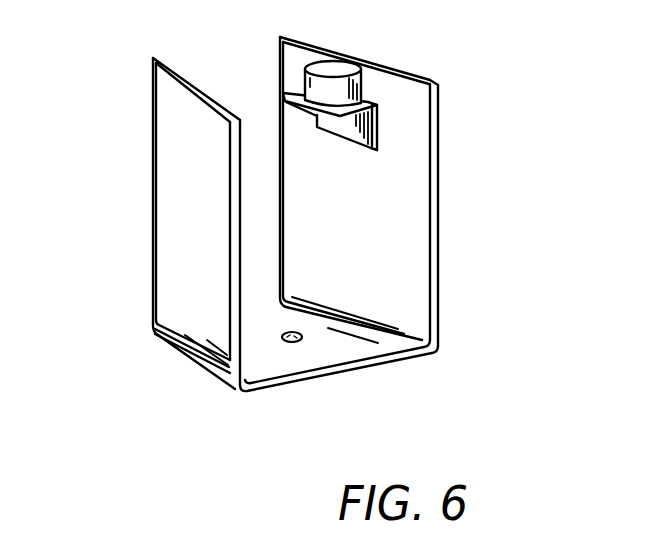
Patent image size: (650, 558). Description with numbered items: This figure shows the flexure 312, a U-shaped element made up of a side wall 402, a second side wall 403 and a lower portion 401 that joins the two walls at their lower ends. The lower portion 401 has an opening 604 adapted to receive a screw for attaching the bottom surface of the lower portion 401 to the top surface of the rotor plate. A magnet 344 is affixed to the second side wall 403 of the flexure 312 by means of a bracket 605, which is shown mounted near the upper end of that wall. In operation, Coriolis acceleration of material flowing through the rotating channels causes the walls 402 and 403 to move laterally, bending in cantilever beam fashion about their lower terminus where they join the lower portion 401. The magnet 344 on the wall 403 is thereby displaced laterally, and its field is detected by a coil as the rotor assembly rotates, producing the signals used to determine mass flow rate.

The flexure 312 is at (304, 224).
The magnet 344 is at (337, 68).
The lower portion 401 is at (344, 385).
The side wall 402 is at (173, 230).
The second side wall 403 is at (405, 237).
The opening 604 is at (303, 338).
The bracket 605 is at (384, 127).